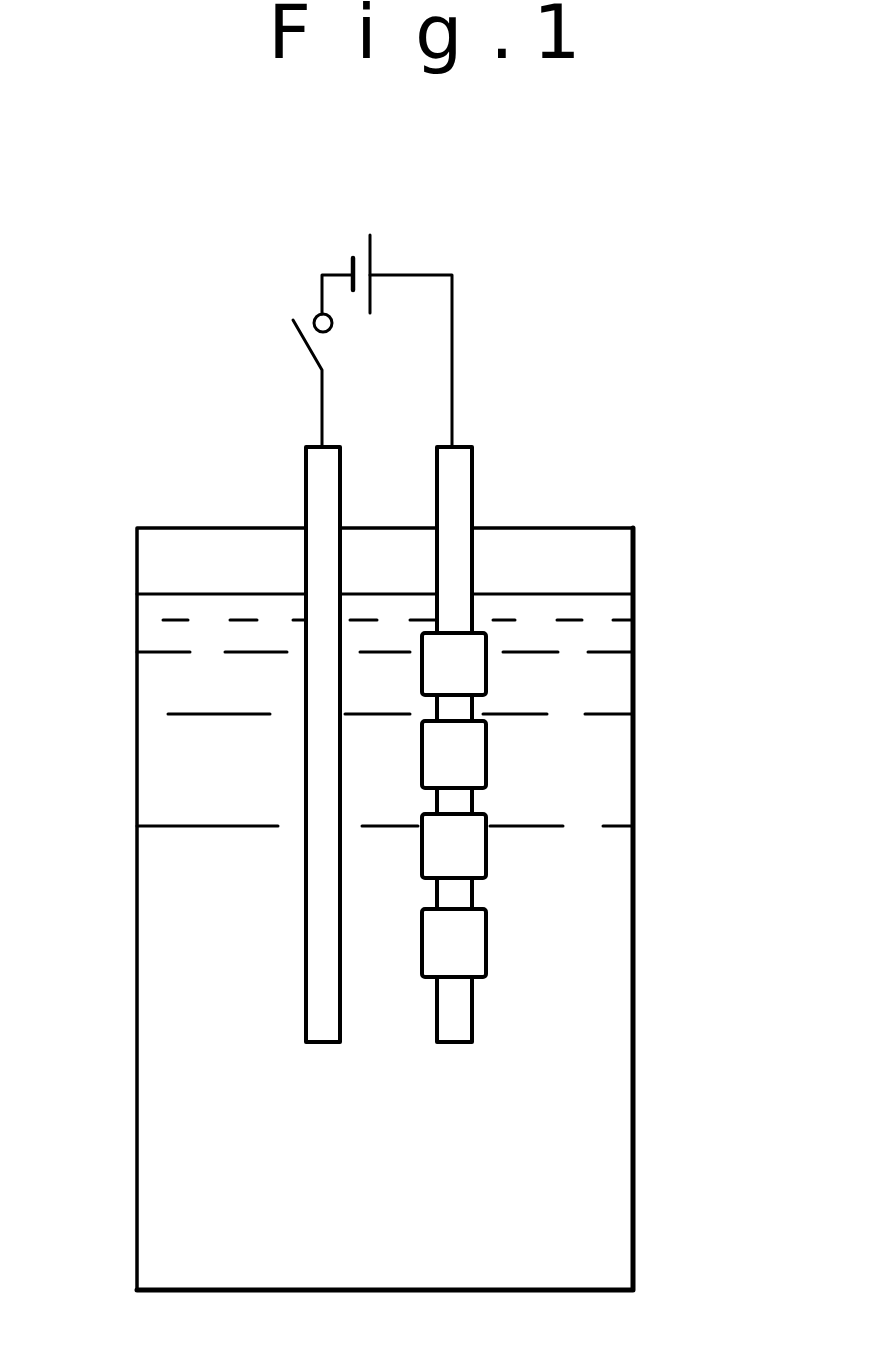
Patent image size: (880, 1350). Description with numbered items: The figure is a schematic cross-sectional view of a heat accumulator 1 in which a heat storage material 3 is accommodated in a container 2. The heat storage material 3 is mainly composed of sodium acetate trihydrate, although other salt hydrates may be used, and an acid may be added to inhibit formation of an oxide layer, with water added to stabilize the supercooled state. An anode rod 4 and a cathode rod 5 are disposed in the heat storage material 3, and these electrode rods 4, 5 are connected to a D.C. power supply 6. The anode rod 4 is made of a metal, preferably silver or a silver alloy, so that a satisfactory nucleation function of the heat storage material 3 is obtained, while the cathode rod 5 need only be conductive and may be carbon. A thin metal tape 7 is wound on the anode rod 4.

The heat accumulator 1 is at (646, 374).
The container 2 is at (633, 621).
The heat storage material 3 is at (610, 688).
The anode rod 4 is at (465, 1012).
The cathode rod 5 is at (318, 950).
The D.C. power supply 6 is at (370, 248).
The metal tape 7 is at (477, 848).